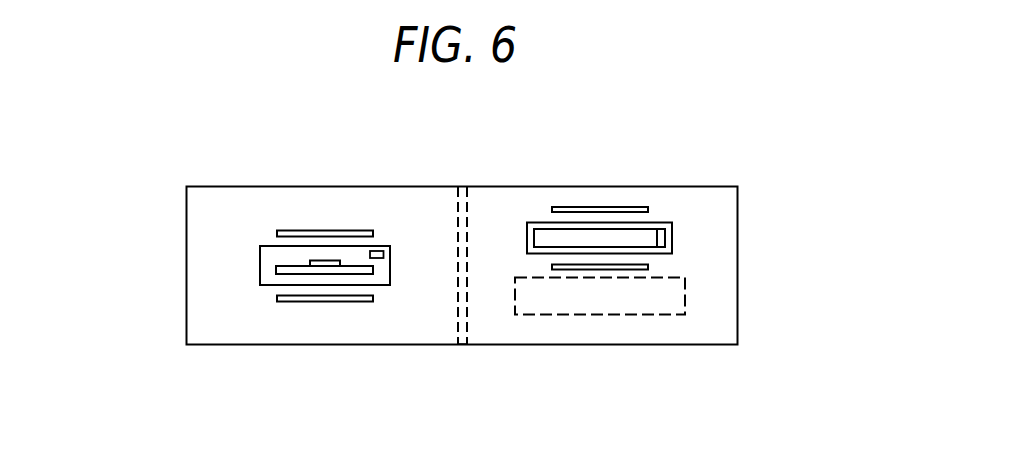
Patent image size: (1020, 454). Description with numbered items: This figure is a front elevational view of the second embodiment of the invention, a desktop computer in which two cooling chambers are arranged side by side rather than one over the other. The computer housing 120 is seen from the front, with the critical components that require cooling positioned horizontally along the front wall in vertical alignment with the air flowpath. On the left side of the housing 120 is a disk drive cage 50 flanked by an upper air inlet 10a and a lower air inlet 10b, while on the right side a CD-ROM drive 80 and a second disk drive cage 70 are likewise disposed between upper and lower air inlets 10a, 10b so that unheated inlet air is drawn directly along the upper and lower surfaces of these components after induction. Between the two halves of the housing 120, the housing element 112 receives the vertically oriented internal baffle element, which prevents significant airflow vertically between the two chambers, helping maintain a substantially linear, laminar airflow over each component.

The computer housing 120 is at (186, 248).
The housing element 112 is at (464, 345).
The upper air inlet 10a is at (337, 230).
The lower air inlet 10b is at (346, 301).
The disk drive cage 50 is at (259, 285).
The CD-ROM drive 80 is at (672, 232).
The disk drive cage 70 is at (685, 298).